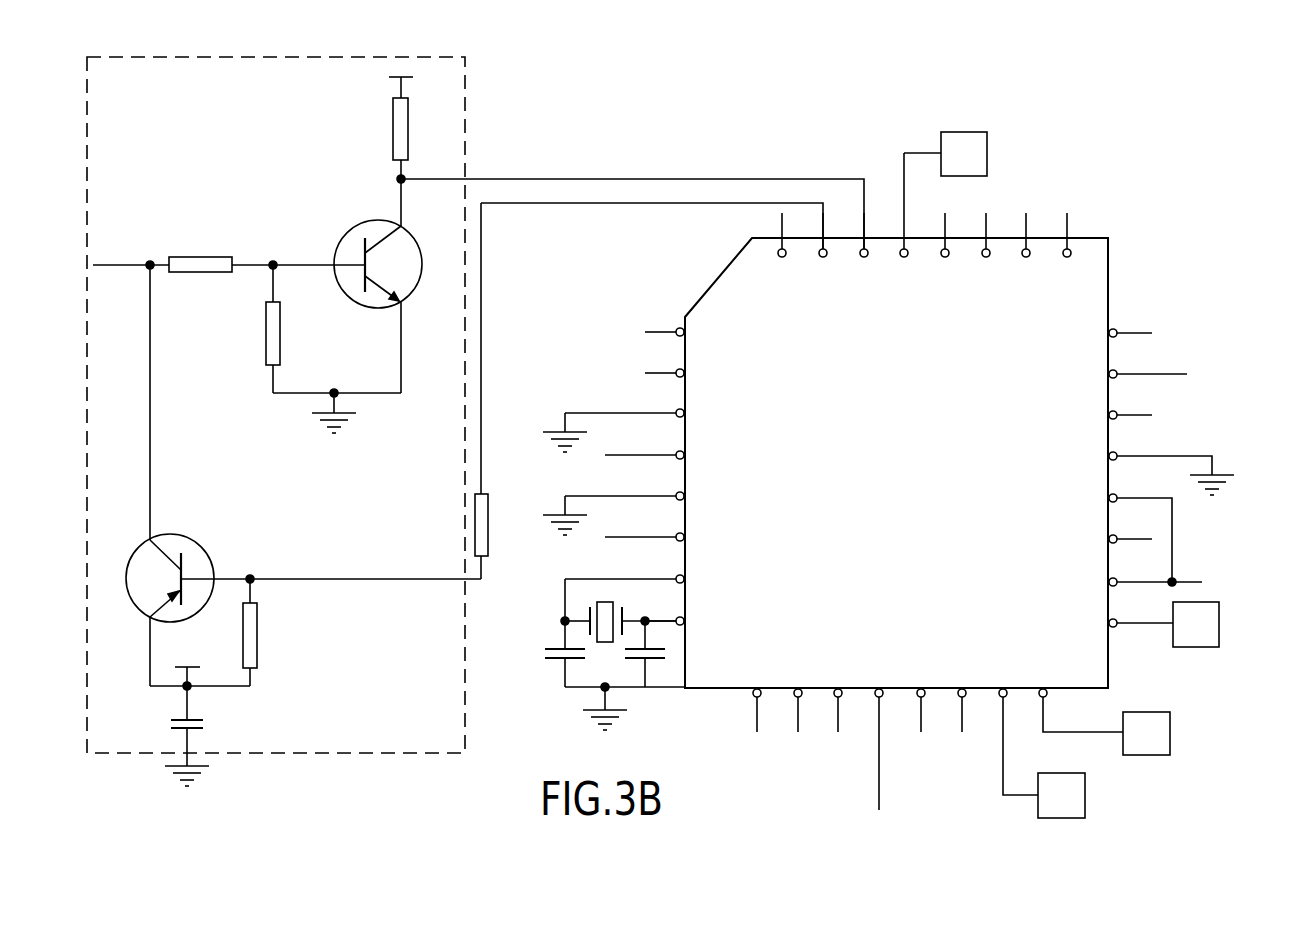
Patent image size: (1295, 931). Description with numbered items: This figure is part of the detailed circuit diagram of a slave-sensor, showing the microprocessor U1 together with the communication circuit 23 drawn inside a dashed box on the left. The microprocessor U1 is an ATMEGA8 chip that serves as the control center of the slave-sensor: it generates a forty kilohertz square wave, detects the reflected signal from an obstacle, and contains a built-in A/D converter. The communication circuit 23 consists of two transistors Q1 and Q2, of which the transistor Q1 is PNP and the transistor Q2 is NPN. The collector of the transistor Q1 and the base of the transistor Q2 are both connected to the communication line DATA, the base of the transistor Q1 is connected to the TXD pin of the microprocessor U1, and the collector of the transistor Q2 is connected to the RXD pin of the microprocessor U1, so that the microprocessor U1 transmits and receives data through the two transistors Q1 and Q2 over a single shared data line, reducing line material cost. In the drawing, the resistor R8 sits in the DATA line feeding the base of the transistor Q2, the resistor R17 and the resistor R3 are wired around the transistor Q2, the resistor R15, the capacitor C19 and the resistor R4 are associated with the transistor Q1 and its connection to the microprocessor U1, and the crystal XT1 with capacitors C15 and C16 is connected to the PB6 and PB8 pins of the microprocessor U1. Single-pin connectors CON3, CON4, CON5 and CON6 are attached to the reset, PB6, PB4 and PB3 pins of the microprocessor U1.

The communication circuit 23 is at (462, 110).
The microprocessor U1 is at (901, 482).
The transistor Q1 is at (303, 603).
The transistor Q2 is at (365, 306).
The resistor 10K R3 is at (412, 143).
The resistor 10K R4 is at (496, 391).
The resistor 10K R8 is at (221, 265).
The resistor 3.9K R15 is at (267, 632).
The resistor 3.9K R17 is at (291, 329).
The capacitor 30P C15 is at (550, 656).
The capacitor 30P C16 is at (651, 675).
The capacitor 104 C19 is at (202, 750).
The crystal 7.68MHz XT1 is at (591, 654).
The connector CON3 is at (945, 144).
The connector CON4 is at (1196, 636).
The connector CON5 is at (1146, 724).
The connector CON6 is at (1061, 786).